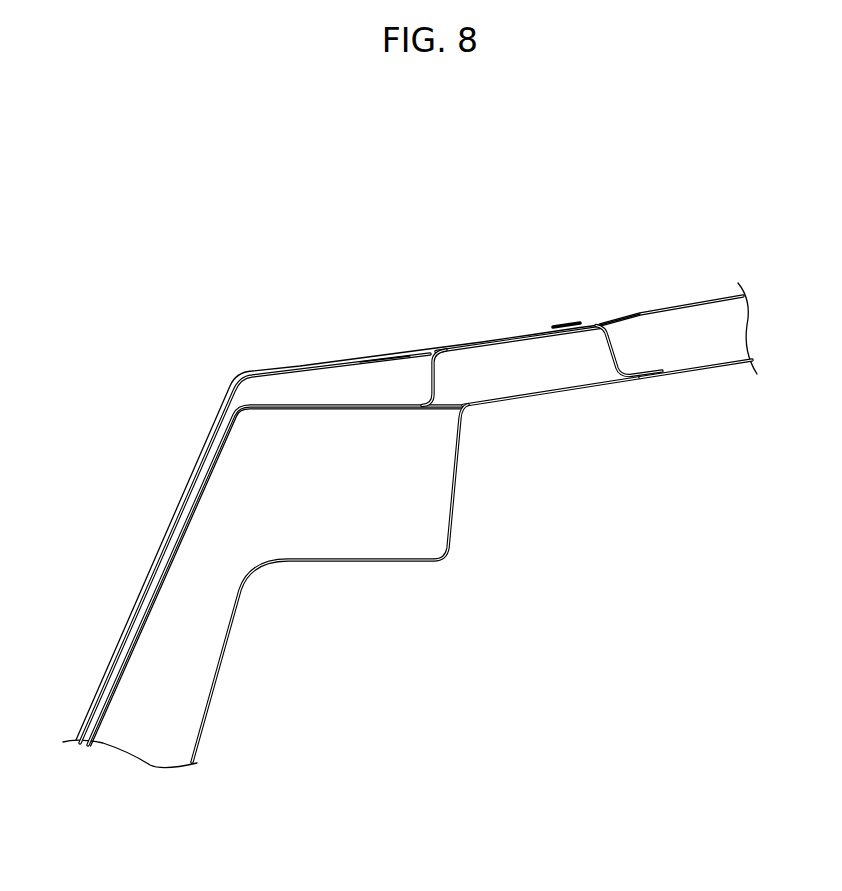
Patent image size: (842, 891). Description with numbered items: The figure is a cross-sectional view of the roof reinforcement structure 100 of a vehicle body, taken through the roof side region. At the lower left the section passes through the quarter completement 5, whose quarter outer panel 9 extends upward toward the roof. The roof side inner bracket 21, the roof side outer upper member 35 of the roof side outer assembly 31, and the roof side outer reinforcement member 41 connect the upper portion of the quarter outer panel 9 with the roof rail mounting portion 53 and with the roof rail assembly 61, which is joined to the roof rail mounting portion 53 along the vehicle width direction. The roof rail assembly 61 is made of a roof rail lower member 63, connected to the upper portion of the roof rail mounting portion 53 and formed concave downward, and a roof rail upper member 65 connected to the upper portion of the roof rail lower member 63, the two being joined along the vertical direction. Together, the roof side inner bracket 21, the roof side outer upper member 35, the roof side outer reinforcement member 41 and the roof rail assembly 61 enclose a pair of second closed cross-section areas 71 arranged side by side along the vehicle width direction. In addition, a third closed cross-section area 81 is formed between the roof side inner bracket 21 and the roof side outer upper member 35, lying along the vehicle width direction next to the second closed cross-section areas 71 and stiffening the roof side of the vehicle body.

The roof reinforcement structure 100 is at (443, 184).
The quarter completement 5 is at (531, 313).
The quarter outer panel 9 is at (482, 342).
The roof side inner bracket 21 is at (266, 402).
The roof side outer assembly 31 is at (383, 346).
The roof side outer upper member 35 is at (304, 369).
The roof side outer reinforcement member 41 is at (433, 407).
The roof rail mounting portion 53 is at (582, 391).
The roof rail assembly 61 is at (706, 290).
The roof rail lower member 63 is at (687, 375).
The roof rail upper member 65 is at (658, 313).
The second closed cross-section area 71 is at (516, 376).
The third closed cross-section area 81 is at (368, 394).